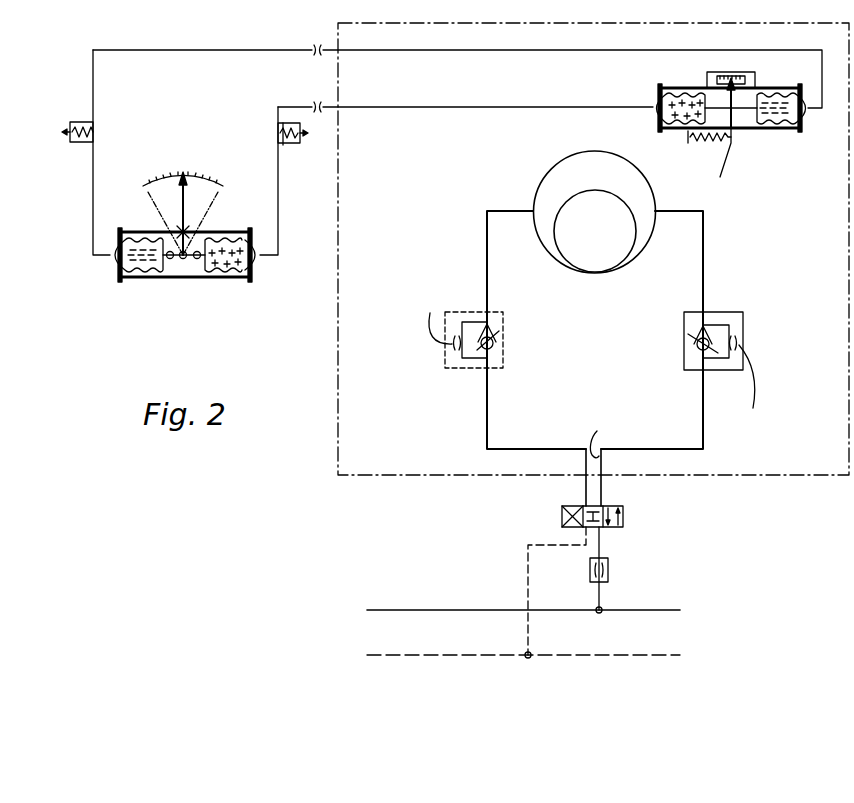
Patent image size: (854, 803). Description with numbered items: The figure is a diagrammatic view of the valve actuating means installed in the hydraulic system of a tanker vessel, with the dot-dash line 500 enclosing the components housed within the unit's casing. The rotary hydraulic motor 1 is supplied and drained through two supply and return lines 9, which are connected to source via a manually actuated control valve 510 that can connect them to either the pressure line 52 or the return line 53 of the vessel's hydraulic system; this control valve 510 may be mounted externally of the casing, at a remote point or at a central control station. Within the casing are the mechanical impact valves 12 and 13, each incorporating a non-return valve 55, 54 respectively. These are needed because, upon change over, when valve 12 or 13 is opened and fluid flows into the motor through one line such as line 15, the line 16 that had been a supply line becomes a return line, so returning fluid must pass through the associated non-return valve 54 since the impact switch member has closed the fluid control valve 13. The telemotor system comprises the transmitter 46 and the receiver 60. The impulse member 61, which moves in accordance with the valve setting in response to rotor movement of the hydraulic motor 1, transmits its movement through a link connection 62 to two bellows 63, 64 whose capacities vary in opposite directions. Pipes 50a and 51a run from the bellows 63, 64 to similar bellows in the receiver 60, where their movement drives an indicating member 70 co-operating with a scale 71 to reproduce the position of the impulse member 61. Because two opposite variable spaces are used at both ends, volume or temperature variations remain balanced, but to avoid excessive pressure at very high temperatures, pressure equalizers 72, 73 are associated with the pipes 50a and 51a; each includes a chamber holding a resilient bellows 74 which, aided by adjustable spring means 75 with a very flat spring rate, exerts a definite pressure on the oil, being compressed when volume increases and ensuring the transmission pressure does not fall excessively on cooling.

The hydraulic motor 1 is at (594, 255).
The supply and return lines 9 is at (594, 454).
The mechanical impact valve 12 is at (730, 362).
The mechanical impact valve 13 is at (460, 362).
The line 15 is at (705, 273).
The line 16 is at (489, 285).
The transmitter 46 is at (700, 75).
The pipe 50a is at (378, 52).
The pipe 51a is at (378, 109).
The pressure line 52 is at (660, 610).
The return line 53 is at (660, 655).
The non-return valve 54 is at (503, 341).
The non-return valve 55 is at (694, 340).
The receiver 60 is at (186, 283).
The impulse member 61 is at (735, 150).
The link connection 62 is at (743, 112).
The bellows 63 is at (778, 95).
The bellows 64 is at (684, 95).
The indicating member 70 is at (186, 200).
The scale 71 is at (176, 173).
The pressure equalizer 72 is at (305, 142).
The pressure equalizer 73 is at (79, 120).
The resilient bellows 74 is at (290, 121).
The adjustable spring means 75 is at (288, 145).
The dot-dash line 500 is at (442, 476).
The manually actuated control valve 510 is at (617, 506).